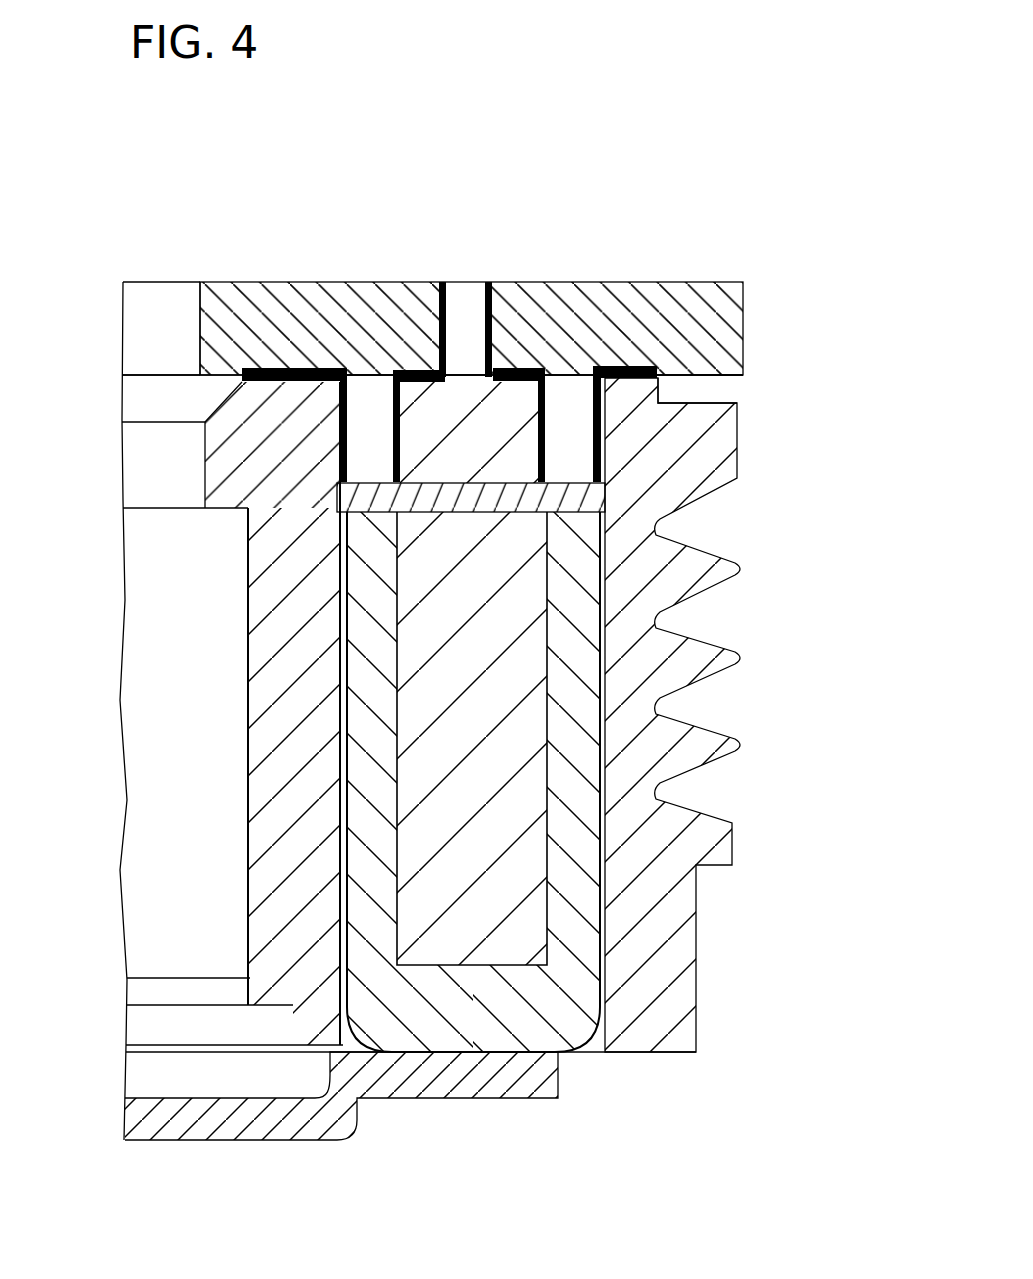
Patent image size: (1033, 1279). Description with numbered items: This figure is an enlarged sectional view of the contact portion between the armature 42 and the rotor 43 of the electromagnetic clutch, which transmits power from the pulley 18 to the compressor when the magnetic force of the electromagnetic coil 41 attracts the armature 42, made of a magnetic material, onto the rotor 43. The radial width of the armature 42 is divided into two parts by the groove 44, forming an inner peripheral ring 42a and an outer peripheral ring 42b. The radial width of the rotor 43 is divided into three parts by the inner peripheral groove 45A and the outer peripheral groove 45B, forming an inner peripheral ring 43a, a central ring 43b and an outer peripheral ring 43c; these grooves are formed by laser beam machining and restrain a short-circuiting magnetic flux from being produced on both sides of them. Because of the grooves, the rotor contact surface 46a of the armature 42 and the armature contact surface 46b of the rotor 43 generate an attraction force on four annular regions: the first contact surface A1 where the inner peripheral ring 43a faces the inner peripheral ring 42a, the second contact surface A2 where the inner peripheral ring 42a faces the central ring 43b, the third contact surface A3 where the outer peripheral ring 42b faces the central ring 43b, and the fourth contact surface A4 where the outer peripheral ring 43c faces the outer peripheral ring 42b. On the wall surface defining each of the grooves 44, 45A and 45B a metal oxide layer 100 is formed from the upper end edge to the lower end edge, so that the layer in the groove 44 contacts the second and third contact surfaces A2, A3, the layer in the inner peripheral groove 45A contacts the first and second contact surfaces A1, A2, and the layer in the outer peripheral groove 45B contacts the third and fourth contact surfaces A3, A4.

The pulley 18 is at (722, 640).
The electromagnetic coil 41 is at (523, 898).
The armature 42 is at (740, 274).
The inner peripheral ring 42a is at (288, 282).
The outer peripheral ring 42b is at (712, 282).
The rotor 43 is at (219, 508).
The inner peripheral ring 43a is at (240, 372).
The central ring 43b is at (460, 377).
The outer peripheral ring 43c is at (628, 366).
The groove 44 is at (467, 375).
The inner peripheral groove 45A is at (365, 385).
The outer peripheral groove 45B is at (587, 438).
The rotor contact surface 46a is at (731, 378).
The armature contact surface 46b is at (667, 372).
The metal oxide layer 100 is at (446, 305).
The first contact surface A1 is at (298, 372).
The second contact surface A2 is at (412, 372).
The third contact surface A3 is at (520, 372).
The fourth contact surface A4 is at (662, 366).